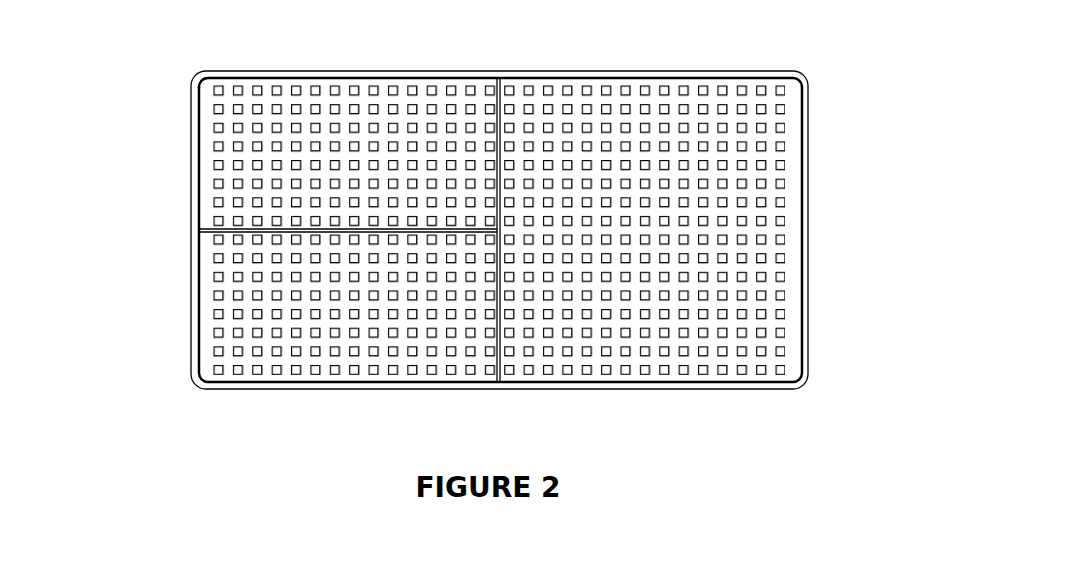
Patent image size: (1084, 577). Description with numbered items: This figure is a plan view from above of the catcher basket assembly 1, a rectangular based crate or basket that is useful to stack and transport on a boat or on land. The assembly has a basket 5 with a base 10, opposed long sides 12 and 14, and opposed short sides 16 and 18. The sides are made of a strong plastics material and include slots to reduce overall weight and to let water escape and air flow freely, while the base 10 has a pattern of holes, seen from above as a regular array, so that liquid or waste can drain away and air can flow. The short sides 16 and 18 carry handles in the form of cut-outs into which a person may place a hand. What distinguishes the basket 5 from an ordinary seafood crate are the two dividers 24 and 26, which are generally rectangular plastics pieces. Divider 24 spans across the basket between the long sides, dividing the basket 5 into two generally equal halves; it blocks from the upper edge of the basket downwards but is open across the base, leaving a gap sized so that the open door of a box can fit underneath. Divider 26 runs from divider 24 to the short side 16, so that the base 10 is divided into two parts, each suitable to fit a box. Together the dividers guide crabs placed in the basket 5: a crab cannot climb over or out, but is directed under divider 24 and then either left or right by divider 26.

The catcher basket assembly 1 is at (158, 88).
The basket 5 is at (197, 76).
The base 10 is at (741, 226).
The long side 12 is at (393, 383).
The long side 14 is at (682, 77).
The short side 16 is at (197, 178).
The short side 18 is at (805, 243).
The divider 24 is at (500, 85).
The divider 26 is at (207, 228).